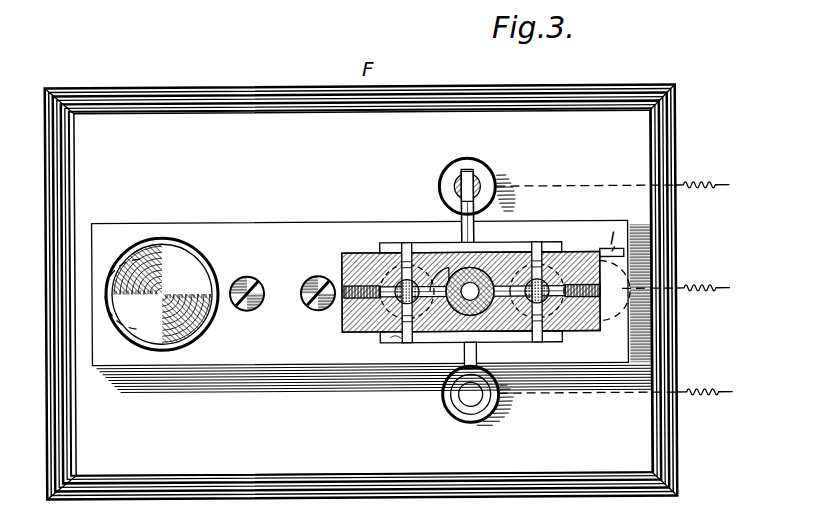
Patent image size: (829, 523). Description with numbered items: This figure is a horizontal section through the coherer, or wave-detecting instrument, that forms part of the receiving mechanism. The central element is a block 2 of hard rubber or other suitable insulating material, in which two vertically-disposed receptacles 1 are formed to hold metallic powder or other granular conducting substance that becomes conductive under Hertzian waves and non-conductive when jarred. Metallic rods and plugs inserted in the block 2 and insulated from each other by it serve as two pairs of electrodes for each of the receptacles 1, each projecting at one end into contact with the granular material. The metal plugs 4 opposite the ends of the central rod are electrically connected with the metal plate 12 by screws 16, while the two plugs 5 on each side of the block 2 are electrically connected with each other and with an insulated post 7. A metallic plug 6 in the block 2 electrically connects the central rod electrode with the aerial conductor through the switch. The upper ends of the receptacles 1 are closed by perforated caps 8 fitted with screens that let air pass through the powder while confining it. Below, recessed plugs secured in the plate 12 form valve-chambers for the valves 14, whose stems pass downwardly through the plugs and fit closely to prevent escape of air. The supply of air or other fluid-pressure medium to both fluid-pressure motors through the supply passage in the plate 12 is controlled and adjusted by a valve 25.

The receptacles 1 is at (552, 272).
The block 2 is at (597, 246).
The metallic plugs 4 is at (306, 326).
The plugs 5 is at (408, 253).
The metallic plug 6 is at (478, 270).
The insulated post 7 is at (441, 187).
The caps 8 is at (449, 266).
The metal plate 12 is at (247, 277).
The valves 14 is at (47, 160).
The screws 16 is at (343, 286).
The valve 25 is at (162, 294).